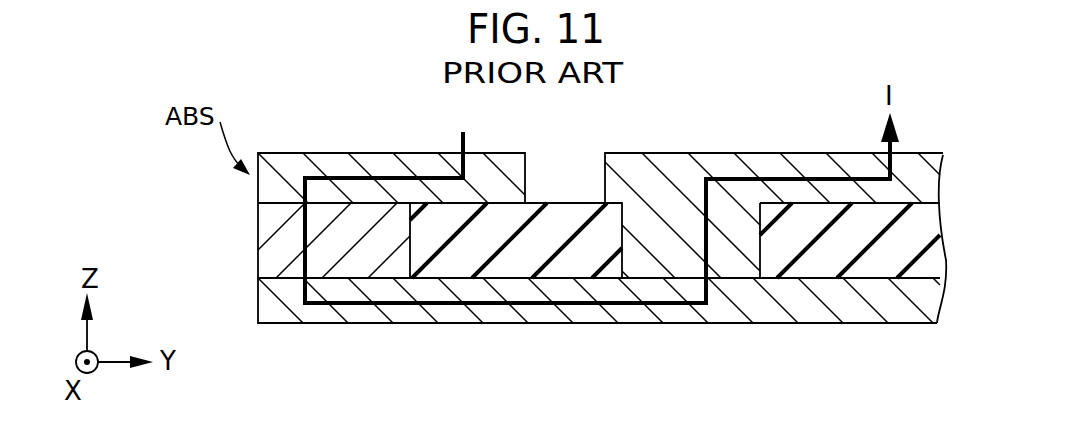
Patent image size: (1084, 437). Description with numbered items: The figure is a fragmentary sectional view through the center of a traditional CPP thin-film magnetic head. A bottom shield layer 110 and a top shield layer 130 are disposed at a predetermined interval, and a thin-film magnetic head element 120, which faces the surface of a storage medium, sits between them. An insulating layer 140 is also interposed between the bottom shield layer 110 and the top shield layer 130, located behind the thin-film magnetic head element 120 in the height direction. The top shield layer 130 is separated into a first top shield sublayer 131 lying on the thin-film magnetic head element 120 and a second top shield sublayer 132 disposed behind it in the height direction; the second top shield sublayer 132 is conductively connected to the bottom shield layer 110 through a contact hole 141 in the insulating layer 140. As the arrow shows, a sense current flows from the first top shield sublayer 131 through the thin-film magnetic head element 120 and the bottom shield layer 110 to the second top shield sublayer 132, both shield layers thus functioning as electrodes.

The bottom shield layer 110 is at (262, 303).
The thin-film magnetic head element 120 is at (262, 228).
The top shield layer 130 is at (602, 195).
The first top shield sublayer 131 is at (368, 160).
The second top shield sublayer 132 is at (760, 165).
The insulating layer 140 is at (556, 225).
The contact hole 141 is at (622, 237).